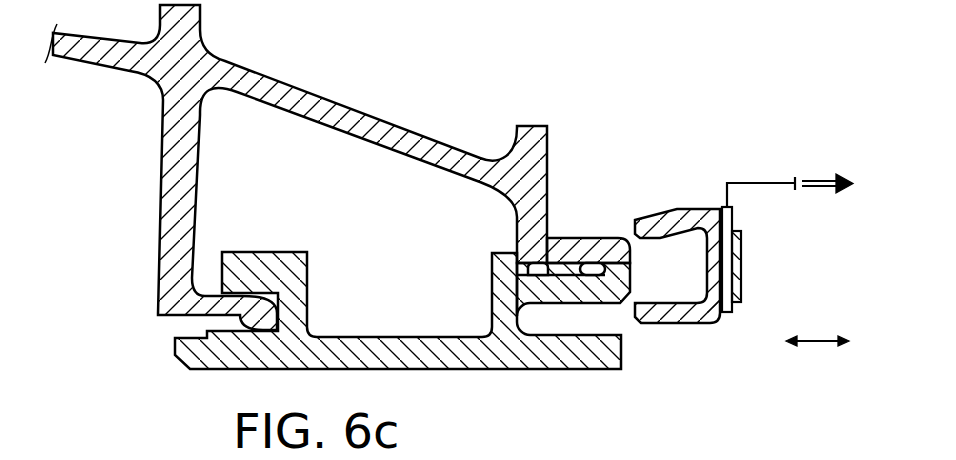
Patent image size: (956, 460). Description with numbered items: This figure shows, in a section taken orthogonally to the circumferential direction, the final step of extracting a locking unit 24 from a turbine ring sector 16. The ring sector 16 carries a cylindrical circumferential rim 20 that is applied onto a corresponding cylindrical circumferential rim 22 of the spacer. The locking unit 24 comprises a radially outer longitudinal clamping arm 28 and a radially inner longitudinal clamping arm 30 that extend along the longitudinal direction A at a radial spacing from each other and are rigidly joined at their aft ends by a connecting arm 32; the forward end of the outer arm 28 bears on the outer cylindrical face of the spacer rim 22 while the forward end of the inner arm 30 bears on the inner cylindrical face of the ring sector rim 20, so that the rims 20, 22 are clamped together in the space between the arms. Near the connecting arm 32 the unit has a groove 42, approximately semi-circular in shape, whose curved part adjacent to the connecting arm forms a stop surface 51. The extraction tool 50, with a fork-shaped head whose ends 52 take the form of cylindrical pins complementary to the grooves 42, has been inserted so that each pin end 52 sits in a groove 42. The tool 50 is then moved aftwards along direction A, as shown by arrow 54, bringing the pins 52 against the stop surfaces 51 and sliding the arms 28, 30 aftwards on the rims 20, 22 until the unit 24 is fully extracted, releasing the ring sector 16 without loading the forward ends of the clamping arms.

The ring sector 16 is at (215, 350).
The circumferential rim 20 is at (547, 288).
The circumferential rim 22 is at (557, 253).
The locking unit 24 is at (650, 272).
The radially outer longitudinal clamping arm 28 is at (637, 225).
The radially inner longitudinal clamping arm 30 is at (647, 322).
The connecting arm 32 is at (708, 323).
The groove 42 is at (766, 286).
The tool 50 is at (762, 174).
The stop surface 51 is at (741, 283).
The tool end 52 is at (728, 312).
The arrow 54 is at (823, 190).
The longitudinal direction A is at (817, 342).